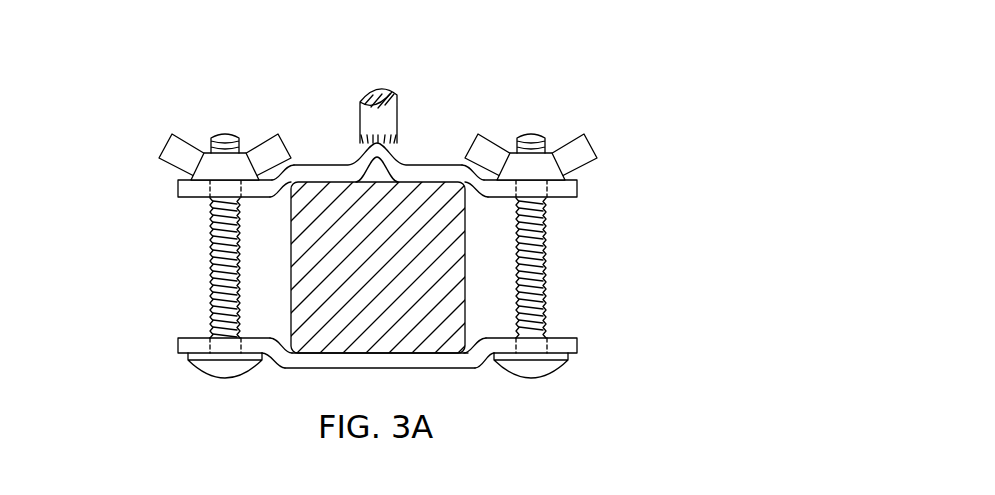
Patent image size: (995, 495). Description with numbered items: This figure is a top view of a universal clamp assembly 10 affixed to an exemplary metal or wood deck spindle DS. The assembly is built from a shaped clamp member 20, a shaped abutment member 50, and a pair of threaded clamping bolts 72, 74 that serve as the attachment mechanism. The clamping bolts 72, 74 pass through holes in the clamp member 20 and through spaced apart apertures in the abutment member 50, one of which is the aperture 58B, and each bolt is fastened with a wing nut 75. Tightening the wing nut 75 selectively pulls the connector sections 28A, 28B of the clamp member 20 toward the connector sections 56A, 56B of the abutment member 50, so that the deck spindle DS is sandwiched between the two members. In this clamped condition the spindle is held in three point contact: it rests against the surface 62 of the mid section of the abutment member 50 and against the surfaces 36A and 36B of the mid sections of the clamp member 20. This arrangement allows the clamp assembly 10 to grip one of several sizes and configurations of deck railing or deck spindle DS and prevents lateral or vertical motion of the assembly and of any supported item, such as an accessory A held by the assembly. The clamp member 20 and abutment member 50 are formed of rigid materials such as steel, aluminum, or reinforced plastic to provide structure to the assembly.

The universal clamp assembly 10 is at (725, 166).
The clamp member 20 is at (327, 112).
The connector section 28A is at (182, 187).
The connector section 28B is at (572, 186).
The surface 36A is at (293, 195).
The surface 36B is at (425, 178).
The abutment member 50 is at (472, 404).
The connector section 56A is at (185, 338).
The connector section 56B is at (570, 340).
The aperture 58B is at (533, 345).
The surface 62 is at (345, 350).
The threaded clamping bolt 72 is at (226, 292).
The threaded clamping bolt 74 is at (530, 290).
The wing nut 75 is at (172, 147).
The accessory A is at (388, 122).
The deck spindle DS is at (397, 203).